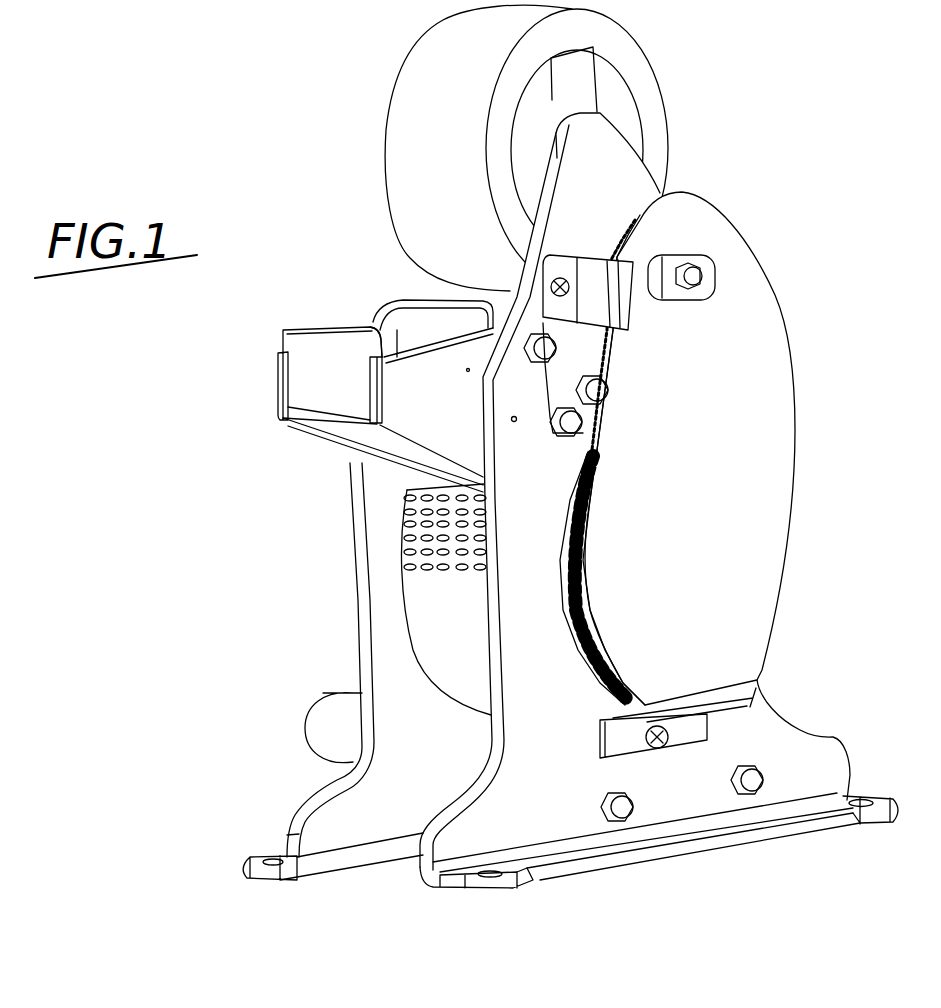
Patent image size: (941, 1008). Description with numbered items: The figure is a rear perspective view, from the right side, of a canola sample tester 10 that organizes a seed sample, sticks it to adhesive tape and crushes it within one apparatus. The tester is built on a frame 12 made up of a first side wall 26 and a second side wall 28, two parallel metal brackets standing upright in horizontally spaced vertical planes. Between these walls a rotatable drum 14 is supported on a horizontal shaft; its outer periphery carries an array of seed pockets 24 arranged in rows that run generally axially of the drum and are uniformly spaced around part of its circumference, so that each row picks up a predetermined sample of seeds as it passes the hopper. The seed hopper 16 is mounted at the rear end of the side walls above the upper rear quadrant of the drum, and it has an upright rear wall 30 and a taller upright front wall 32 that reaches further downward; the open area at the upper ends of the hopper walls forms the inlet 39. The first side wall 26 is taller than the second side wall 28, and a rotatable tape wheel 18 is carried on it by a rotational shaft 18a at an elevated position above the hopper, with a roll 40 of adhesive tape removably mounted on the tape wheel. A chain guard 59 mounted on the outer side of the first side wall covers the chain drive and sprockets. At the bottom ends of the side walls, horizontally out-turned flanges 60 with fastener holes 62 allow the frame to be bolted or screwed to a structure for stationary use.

The canola sample tester 10 is at (870, 268).
The frame 12 is at (565, 697).
The rotatable drum 14 is at (446, 672).
The seed hopper 16 is at (363, 375).
The rotatable tape wheel 18 is at (580, 78).
The rotational shaft 18a is at (592, 150).
The seed pockets 24 is at (415, 527).
The first side wall 26 is at (762, 700).
The second side wall 28 is at (313, 840).
The rear wall 30 is at (302, 374).
The front wall 32 is at (410, 313).
The inlet 39 is at (364, 325).
The roll of adhesive tape 40 is at (400, 101).
The chain guard 59 is at (777, 388).
The out-turned flanges 60 is at (252, 878).
The fastener holes 62 is at (273, 862).